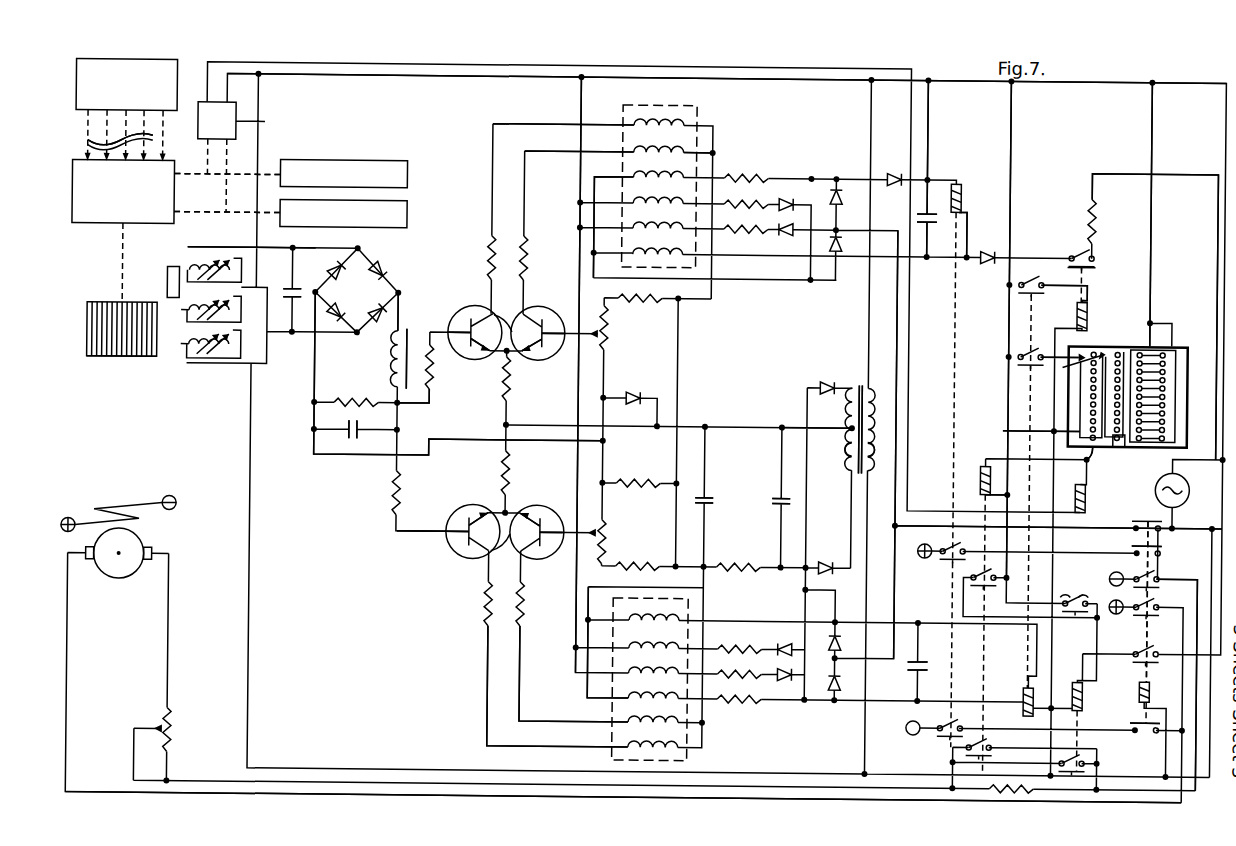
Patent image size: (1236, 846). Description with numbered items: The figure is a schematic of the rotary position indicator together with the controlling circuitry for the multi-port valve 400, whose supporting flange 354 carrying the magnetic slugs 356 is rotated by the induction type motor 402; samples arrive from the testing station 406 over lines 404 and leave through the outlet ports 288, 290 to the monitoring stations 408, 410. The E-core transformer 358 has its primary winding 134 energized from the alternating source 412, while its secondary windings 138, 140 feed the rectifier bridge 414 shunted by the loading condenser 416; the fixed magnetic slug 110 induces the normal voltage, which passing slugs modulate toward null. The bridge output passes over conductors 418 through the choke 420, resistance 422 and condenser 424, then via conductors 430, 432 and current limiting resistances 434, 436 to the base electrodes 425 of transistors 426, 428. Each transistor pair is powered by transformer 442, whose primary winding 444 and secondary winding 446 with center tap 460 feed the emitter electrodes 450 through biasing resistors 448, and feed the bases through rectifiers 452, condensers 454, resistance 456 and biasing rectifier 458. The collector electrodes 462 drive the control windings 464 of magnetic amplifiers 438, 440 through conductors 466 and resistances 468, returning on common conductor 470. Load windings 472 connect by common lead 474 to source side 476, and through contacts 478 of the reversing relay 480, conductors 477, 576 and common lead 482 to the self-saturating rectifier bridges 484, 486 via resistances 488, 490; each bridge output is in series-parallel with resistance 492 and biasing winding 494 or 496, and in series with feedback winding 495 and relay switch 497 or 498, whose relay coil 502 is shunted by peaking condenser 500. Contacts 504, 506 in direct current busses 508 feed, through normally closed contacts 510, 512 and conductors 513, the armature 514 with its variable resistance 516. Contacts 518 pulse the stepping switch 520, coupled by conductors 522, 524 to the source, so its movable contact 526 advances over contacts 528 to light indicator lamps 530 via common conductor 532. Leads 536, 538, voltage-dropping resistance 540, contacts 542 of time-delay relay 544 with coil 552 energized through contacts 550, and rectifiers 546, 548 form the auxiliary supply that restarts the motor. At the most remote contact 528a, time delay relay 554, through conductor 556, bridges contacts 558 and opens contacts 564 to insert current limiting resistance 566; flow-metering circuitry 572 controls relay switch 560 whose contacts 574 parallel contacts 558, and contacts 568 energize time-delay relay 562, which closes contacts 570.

The fixed magnetic slug 110 is at (166, 276).
The primary winding 134 is at (180, 313).
The secondary winding 138 is at (190, 362).
The secondary winding 140 is at (215, 273).
The outlet port 288 is at (190, 175).
The outlet port 290 is at (212, 214).
The supporting flange 354 is at (100, 307).
The magnetic slugs 356 is at (118, 362).
The E-core transformer 358 is at (241, 393).
The multi-port valve 400 is at (92, 259).
The induction type motor 402 is at (107, 505).
The signal lines 404 is at (101, 132).
The testing station 406 is at (170, 60).
The monitoring station 408 is at (392, 158).
The monitoring station 410 is at (376, 229).
The alternating potential source 412 is at (1156, 486).
The rectifier bridge 414 is at (372, 306).
The loading condenser 416 is at (283, 293).
The conductors 418 is at (399, 295).
The choke 420 is at (393, 350).
The resistance 422 is at (367, 393).
The condenser 424 is at (330, 433).
The base electrodes 425 is at (446, 331).
The transistor 426 is at (458, 312).
The transistor 428 is at (556, 306).
The conductor 430 is at (605, 365).
The conductor 432 is at (406, 402).
The current limiting resistance 434 is at (434, 383).
The adjustable current limiting resistance 436 is at (609, 330).
The bistable magnetic amplifier 438 is at (696, 112).
The bistable magnetic amplifier 440 is at (690, 756).
The power supply transformer 442 is at (868, 368).
The primary winding 444 is at (870, 460).
The secondary winding 446 is at (850, 466).
The biasing resistors 448 is at (510, 402).
The emitter electrodes 450 is at (483, 352).
The rectifiers 452 is at (822, 384).
The condensers 454 is at (714, 496).
The resistance 456 is at (739, 564).
The biasing rectifier 458 is at (630, 396).
The center tap 460 is at (850, 426).
The collector electrodes 462 is at (506, 433).
The control windings 464 is at (650, 150).
The conductors 466 is at (525, 118).
The current limiting resistances 468 is at (492, 240).
The common conductor 470 is at (710, 152).
The load windings 472 is at (672, 214).
The common lead 474 is at (580, 110).
The side of alternating current source 476 is at (631, 77).
The other side of source 477 is at (1199, 571).
The contacts 478 is at (1127, 544).
The reversing relay switch 480 is at (1142, 710).
The common lead 482 is at (897, 481).
The self-saturating rectifier bridge 484 is at (811, 221).
The self-saturating rectifier bridge 486 is at (824, 673).
The current limiting resistance 488 is at (785, 199).
The current limiting resistance 490 is at (758, 644).
The current limiting resistance 492 is at (754, 177).
The biasing winding 494 is at (618, 177).
The feedback winding 495 is at (688, 256).
The biasing winding 496 is at (625, 698).
The relay switch 497 is at (963, 191).
The relay switch 498 is at (1026, 682).
The peaking condenser 500 is at (918, 215).
The relay coil 502 is at (954, 182).
The contacts 504 is at (946, 547).
The contacts 506 is at (950, 720).
The direct current busses 508 is at (1112, 575).
The normally closed contacts 510 is at (1142, 720).
The normally closed contacts 512 is at (1158, 548).
The conductors 513 is at (433, 797).
The armature 514 is at (128, 583).
The speed adjusting variable resistance 516 is at (173, 733).
The contacts 518 is at (1018, 350).
The stepping switch 520 is at (1093, 348).
The conductor 522 is at (1010, 122).
The conductor 524 is at (1003, 430).
The movable contact 526 is at (1107, 465).
The contacts 528 is at (1117, 383).
The most remote contact 528a is at (1125, 445).
The indicator lamps 530 is at (1150, 348).
The common conductor 532 is at (1150, 241).
The lead 536 is at (927, 118).
The lead 538 is at (1121, 170).
The voltage-dropping resistance 540 is at (1095, 231).
The contacts 542 is at (1080, 248).
The time-delay relay 544 is at (1087, 306).
The rectifier 546 is at (990, 258).
The rectifier 548 is at (893, 166).
The contacts 550 is at (1022, 280).
The coil 552 is at (1076, 313).
The time delay relay switch 554 is at (1000, 453).
The conductor 556 is at (985, 494).
The contacts 558 is at (955, 579).
The relay switch 560 is at (1127, 509).
The time-delay relay 562 is at (1085, 692).
The normally closed contacts 564 is at (956, 745).
The current limiting resistance 566 is at (986, 785).
The contacts 568 is at (1142, 650).
The contacts 570 is at (1075, 752).
The flow-metering circuitry 572 is at (233, 125).
The contacts 574 is at (1072, 618).
The conductor 576 is at (1140, 515).